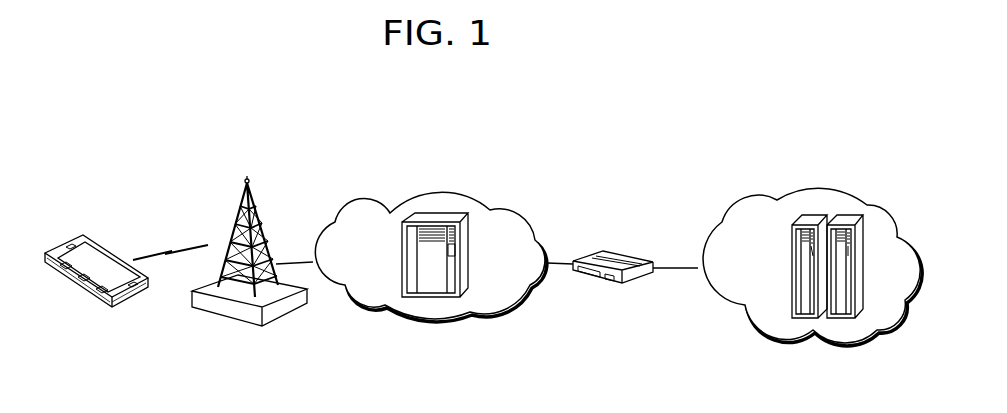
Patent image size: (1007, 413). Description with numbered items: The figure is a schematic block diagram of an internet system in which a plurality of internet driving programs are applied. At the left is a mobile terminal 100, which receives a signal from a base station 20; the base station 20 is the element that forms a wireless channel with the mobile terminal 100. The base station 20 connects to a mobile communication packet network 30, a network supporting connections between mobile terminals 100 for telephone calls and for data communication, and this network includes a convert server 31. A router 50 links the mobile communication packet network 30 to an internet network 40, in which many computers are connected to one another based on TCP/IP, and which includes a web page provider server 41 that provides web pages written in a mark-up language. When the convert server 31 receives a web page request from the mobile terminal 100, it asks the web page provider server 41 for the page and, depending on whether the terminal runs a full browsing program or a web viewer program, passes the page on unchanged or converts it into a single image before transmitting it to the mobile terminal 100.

The mobile terminal 100 is at (100, 244).
The base station 20 is at (258, 215).
The mobile communication packet network 30 is at (480, 203).
The convert server 31 is at (433, 288).
The router 50 is at (612, 255).
The internet network 40 is at (863, 204).
The web page provider server 41 is at (797, 223).